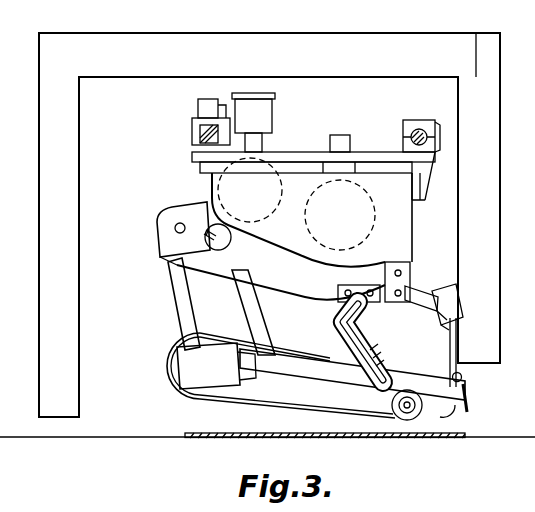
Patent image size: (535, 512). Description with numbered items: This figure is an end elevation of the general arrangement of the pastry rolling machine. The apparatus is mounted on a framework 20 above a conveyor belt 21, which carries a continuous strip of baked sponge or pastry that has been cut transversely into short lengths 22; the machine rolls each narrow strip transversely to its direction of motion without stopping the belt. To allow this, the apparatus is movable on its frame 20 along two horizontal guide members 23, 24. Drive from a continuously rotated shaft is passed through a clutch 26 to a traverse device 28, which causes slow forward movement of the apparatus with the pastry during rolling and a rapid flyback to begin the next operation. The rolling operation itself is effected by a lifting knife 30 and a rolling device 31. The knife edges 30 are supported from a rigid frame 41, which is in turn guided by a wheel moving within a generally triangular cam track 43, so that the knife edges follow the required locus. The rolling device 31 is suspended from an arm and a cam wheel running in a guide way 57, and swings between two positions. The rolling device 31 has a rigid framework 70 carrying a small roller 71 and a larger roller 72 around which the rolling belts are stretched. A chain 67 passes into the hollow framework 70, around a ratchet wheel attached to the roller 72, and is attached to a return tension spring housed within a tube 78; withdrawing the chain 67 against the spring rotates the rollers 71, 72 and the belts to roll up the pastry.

The framework 20 is at (47, 180).
The conveyor belt 21 is at (136, 435).
The short lengths 22 is at (225, 435).
The horizontal guide member 23 is at (198, 129).
The horizontal guide member 24 is at (419, 129).
The clutch 26 is at (280, 122).
The traverse device 28 is at (362, 222).
The lifting knife 30 is at (452, 369).
The rolling device 31 is at (167, 386).
The rigid frame 41 is at (462, 378).
The cam track 43 is at (400, 290).
The guide way 57 is at (356, 360).
The chain 67 is at (211, 226).
The rigid framework 70 is at (176, 291).
The small roller 71 is at (406, 421).
The larger roller 72 is at (174, 366).
The tube 78 is at (466, 406).